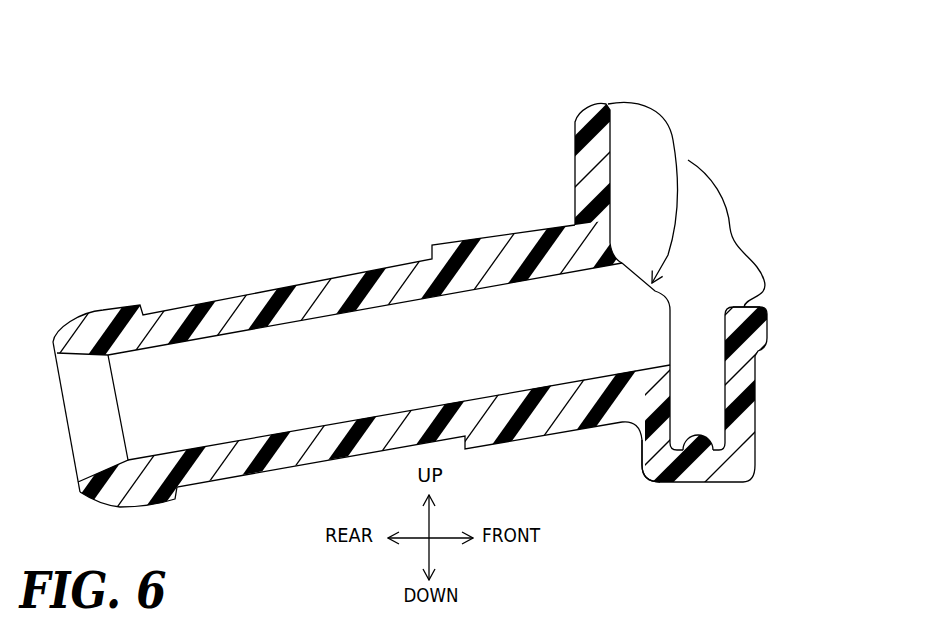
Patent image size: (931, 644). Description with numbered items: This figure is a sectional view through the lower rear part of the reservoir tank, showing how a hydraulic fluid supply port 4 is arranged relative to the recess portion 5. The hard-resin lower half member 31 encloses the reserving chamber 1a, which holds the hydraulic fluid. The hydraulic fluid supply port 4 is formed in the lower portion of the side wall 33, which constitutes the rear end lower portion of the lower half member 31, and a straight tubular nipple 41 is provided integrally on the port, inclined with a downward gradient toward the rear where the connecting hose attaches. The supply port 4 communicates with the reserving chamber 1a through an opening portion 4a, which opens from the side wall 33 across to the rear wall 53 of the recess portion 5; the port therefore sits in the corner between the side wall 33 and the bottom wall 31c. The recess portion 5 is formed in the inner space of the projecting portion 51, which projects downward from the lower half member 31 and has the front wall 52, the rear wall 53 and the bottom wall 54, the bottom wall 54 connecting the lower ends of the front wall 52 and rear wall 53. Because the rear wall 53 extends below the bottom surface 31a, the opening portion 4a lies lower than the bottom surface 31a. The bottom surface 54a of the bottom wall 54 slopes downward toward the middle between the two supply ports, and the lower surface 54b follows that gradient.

The hydraulic fluid supply port 4 is at (502, 232).
The nipple 41 is at (316, 278).
The opening portion 4a is at (678, 174).
The lower half member 31 is at (548, 117).
The side wall 33 is at (575, 173).
The bottom surface 31a is at (740, 307).
The bottom wall 31c is at (767, 323).
The reserving chamber 1a is at (642, 145).
The recess portion 5 is at (698, 305).
The projecting portion 51 is at (763, 480).
The front wall 52 is at (740, 390).
The rear wall 53 is at (657, 443).
The bottom wall 54 is at (697, 470).
The bottom surface 54a is at (700, 475).
The lower surface 54b is at (700, 484).